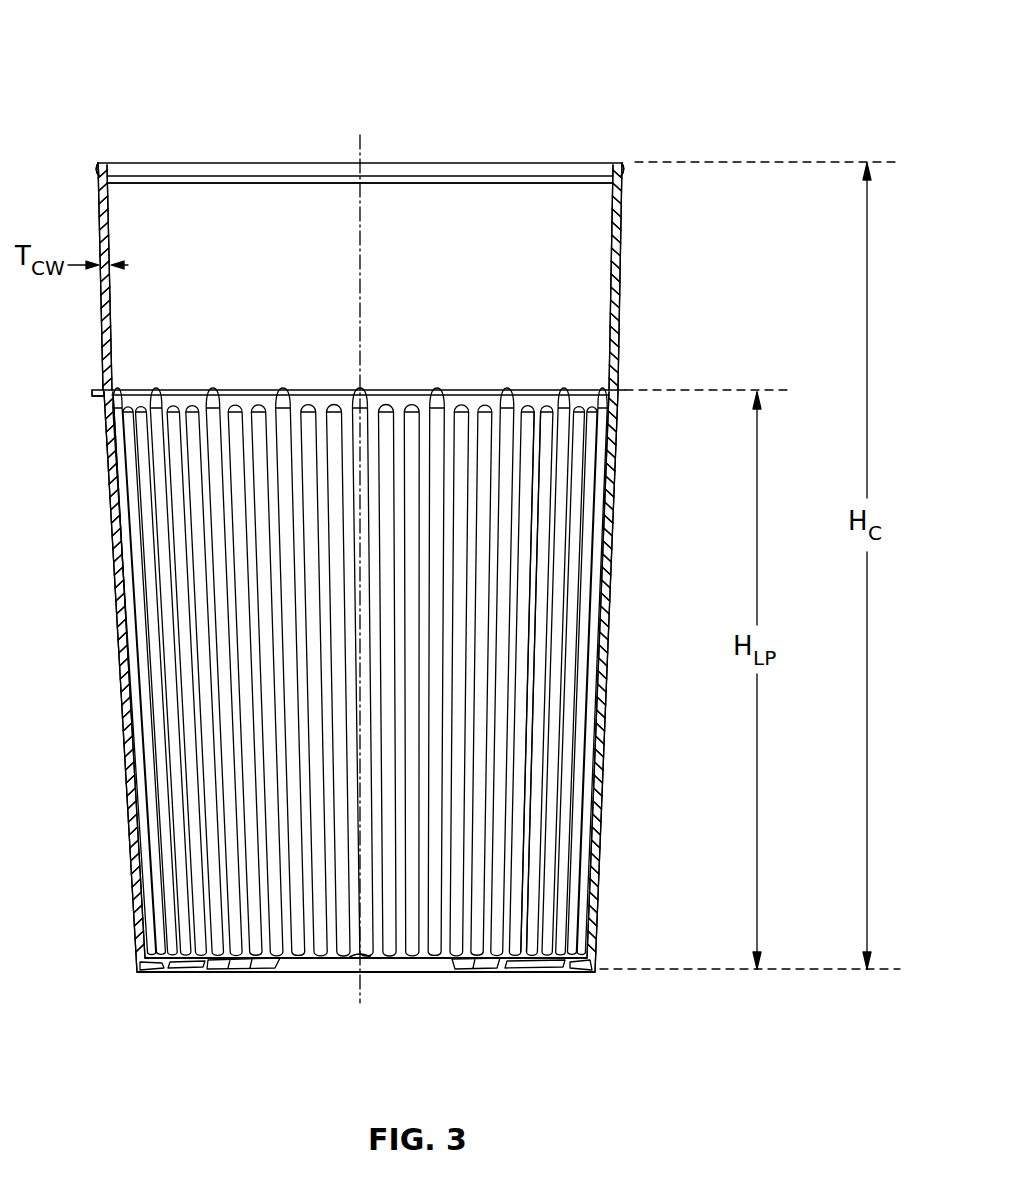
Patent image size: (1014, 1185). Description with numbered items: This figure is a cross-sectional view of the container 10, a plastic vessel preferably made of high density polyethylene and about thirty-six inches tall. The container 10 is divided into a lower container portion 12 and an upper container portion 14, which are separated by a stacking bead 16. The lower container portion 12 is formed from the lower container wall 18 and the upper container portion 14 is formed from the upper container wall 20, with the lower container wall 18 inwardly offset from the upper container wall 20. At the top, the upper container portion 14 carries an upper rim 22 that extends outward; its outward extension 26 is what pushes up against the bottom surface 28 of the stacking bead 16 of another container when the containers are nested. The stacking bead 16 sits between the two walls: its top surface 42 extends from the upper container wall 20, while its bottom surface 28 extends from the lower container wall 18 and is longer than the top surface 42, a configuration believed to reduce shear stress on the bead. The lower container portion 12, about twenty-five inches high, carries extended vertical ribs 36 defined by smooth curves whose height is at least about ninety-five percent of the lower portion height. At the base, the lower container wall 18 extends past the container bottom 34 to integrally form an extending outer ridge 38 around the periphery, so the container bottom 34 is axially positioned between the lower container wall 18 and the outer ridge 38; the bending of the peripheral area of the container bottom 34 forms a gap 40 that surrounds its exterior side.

The container 10 is at (113, 56).
The lower container portion 12 is at (628, 750).
The upper container portion 14 is at (642, 259).
The stacking bead 16 is at (103, 390).
The lower container wall 18 is at (545, 478).
The upper container wall 20 is at (558, 354).
The upper rim 22 is at (565, 167).
The outward extension 26 is at (95, 165).
The bottom surface 28 is at (92, 396).
The container bottom 34 is at (505, 963).
The extended vertical ribs 36 is at (560, 534).
The extending outer ridge 38 is at (135, 968).
The gap 40 is at (150, 972).
The top surface 42 is at (104, 388).